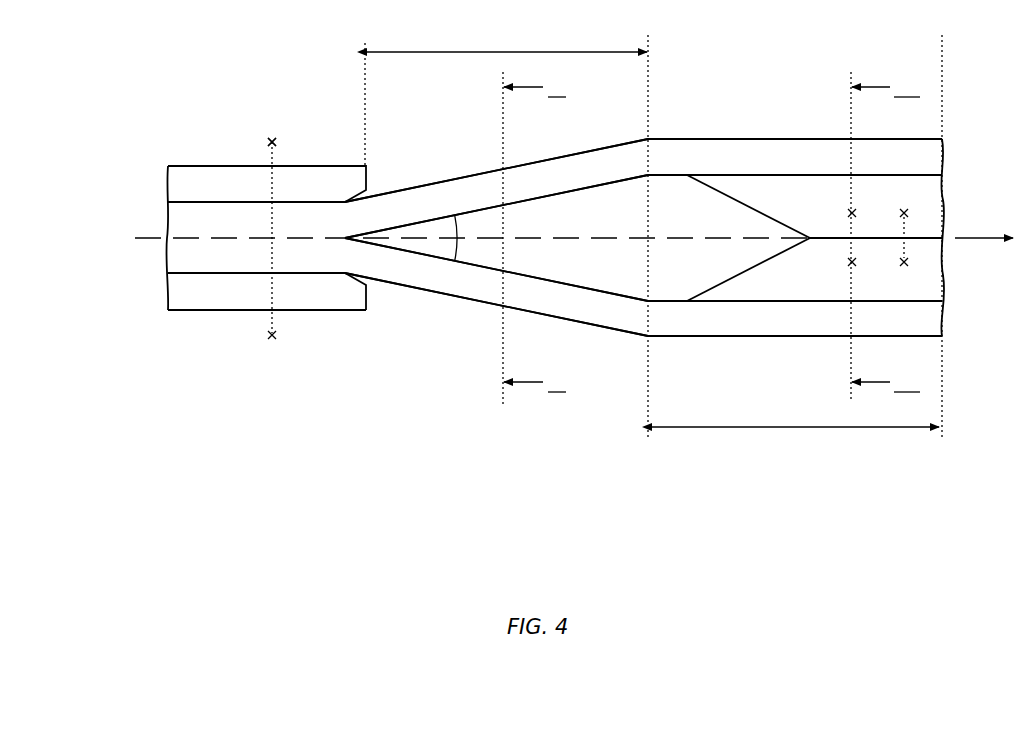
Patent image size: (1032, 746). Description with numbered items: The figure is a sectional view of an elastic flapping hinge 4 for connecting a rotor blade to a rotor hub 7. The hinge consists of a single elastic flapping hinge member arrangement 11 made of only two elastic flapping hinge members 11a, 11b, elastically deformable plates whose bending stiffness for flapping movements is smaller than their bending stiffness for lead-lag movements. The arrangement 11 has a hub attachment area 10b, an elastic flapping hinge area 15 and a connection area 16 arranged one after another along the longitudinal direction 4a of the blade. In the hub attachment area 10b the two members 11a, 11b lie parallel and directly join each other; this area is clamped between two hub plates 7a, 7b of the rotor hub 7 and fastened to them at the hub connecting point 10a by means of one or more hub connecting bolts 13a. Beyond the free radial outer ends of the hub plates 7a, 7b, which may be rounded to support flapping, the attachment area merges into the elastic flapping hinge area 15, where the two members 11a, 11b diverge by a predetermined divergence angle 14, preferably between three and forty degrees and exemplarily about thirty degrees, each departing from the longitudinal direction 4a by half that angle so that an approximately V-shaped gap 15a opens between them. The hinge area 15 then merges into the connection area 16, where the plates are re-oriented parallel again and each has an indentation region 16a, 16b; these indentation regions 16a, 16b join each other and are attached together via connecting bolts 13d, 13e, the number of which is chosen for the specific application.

The elastic flapping hinge 4 is at (578, 127).
The longitudinal direction 4a is at (975, 237).
The rotor hub 7 is at (176, 182).
The hub plate 7a is at (308, 165).
The hub plate 7b is at (303, 311).
The hub connecting point 10a is at (272, 131).
The hub attachment area 10b is at (164, 251).
The elastic flapping hinge member arrangement 11 is at (402, 308).
The elastic flapping hinge member 11a is at (486, 173).
The elastic flapping hinge member 11b is at (486, 302).
The hub connecting bolt 13a is at (270, 290).
The connecting bolt 13d is at (855, 218).
The connecting bolt 13e is at (905, 243).
The predetermined divergence angle 14 is at (458, 232).
The elastic flapping hinge area 15 is at (505, 51).
The V-shaped gap 15a is at (570, 264).
The connection area 16 is at (797, 427).
The indentation region 16a is at (706, 188).
The indentation region 16b is at (706, 288).